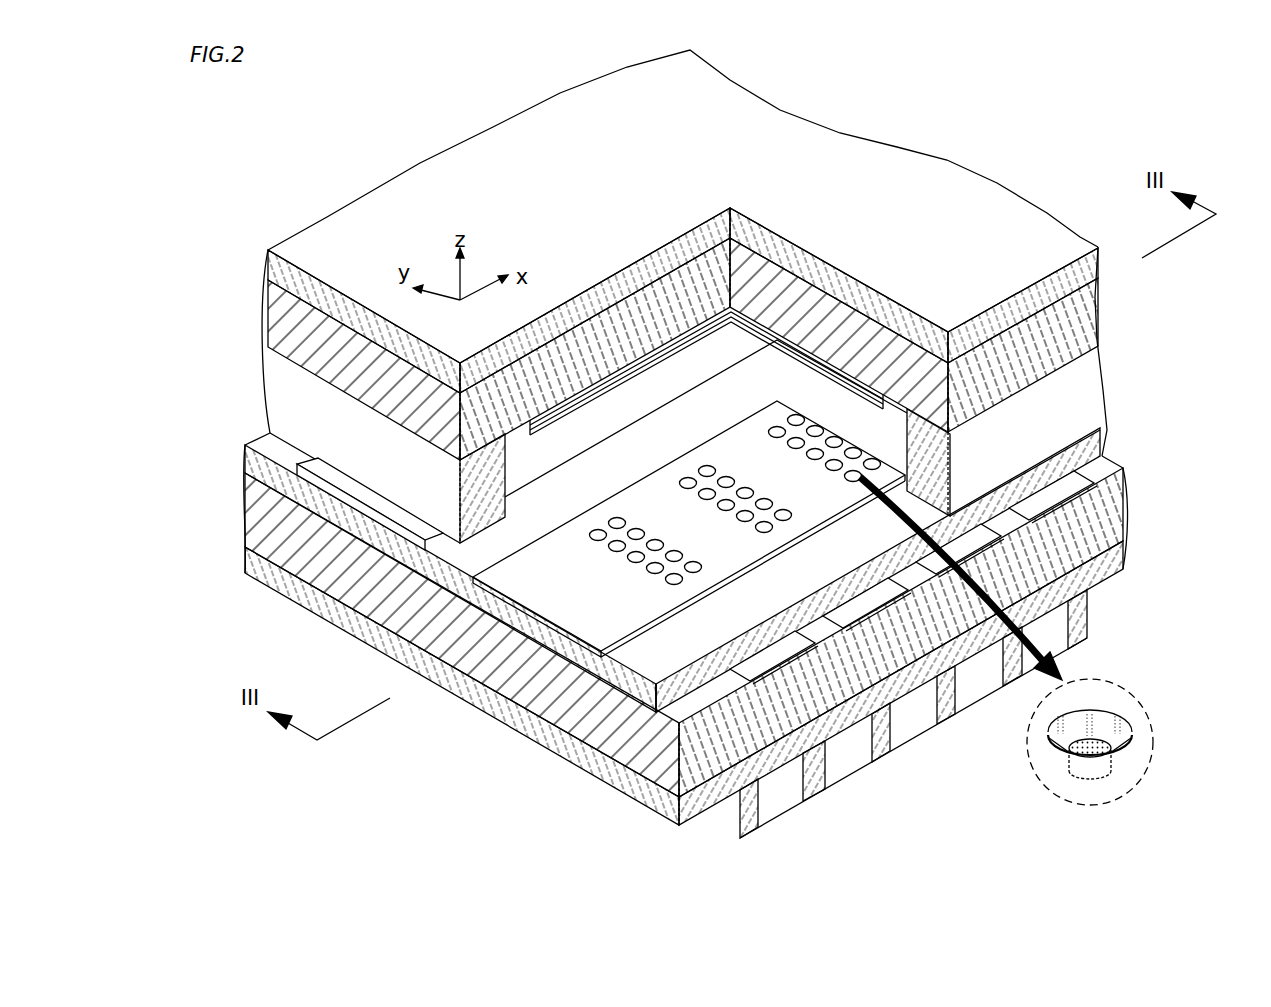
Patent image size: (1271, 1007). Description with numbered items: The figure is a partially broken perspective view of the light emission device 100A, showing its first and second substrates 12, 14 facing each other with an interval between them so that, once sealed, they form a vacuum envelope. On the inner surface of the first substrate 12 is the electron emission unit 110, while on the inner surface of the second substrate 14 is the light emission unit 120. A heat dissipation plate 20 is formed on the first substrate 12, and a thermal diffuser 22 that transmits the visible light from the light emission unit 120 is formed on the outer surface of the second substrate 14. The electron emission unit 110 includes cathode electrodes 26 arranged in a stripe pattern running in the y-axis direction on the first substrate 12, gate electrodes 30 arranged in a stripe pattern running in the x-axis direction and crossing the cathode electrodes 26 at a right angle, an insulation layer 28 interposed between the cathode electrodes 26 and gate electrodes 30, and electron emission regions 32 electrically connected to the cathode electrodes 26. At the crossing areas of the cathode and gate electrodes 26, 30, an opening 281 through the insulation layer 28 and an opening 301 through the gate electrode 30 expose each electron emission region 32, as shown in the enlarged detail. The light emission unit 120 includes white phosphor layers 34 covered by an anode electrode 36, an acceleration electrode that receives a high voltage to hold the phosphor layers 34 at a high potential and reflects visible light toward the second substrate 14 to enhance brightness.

The light emission device 100A is at (416, 160).
The thermal diffuser 22 is at (347, 243).
The second substrate 14 is at (292, 312).
The light emission unit 120 is at (706, 319).
The phosphor layers 34 is at (618, 366).
The anode electrode 36 is at (650, 366).
The electron emission unit 110 is at (775, 386).
The insulation layer 28 is at (1090, 444).
The gate electrodes 30 is at (403, 524).
The first substrate 12 is at (532, 744).
The heat dissipation plate 20 is at (762, 792).
The cathode electrodes 26 is at (858, 610).
The opening 301 is at (1090, 708).
The opening 281 is at (1104, 728).
The electron emission regions 32 is at (1104, 753).